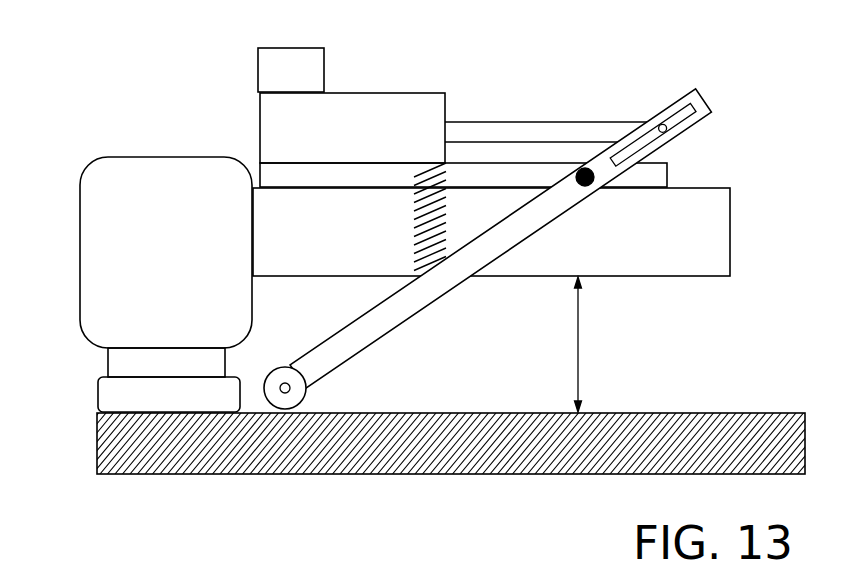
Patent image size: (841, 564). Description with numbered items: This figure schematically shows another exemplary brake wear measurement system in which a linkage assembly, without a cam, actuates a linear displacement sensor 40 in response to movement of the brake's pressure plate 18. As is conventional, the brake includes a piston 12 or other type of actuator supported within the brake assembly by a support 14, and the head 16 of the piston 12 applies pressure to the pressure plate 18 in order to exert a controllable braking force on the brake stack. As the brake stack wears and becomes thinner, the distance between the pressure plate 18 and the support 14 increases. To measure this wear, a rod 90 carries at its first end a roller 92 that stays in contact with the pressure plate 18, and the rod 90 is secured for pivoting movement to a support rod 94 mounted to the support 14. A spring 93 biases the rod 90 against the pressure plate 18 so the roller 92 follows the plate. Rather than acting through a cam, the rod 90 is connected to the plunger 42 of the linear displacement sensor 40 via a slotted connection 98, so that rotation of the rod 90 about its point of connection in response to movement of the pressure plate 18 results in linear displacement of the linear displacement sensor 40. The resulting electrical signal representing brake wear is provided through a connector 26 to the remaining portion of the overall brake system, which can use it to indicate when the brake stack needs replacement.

The piston 12 is at (172, 274).
The support 14 is at (705, 222).
The head 16 is at (113, 393).
The pressure plate 18 is at (222, 443).
The connector 26 is at (312, 70).
The linear displacement sensor 40 is at (395, 115).
The plunger 42 is at (535, 130).
The rod 90 is at (535, 238).
The roller 92 is at (278, 372).
The spring 93 is at (423, 220).
The support rod 94 is at (302, 177).
The slotted connection 98 is at (692, 130).